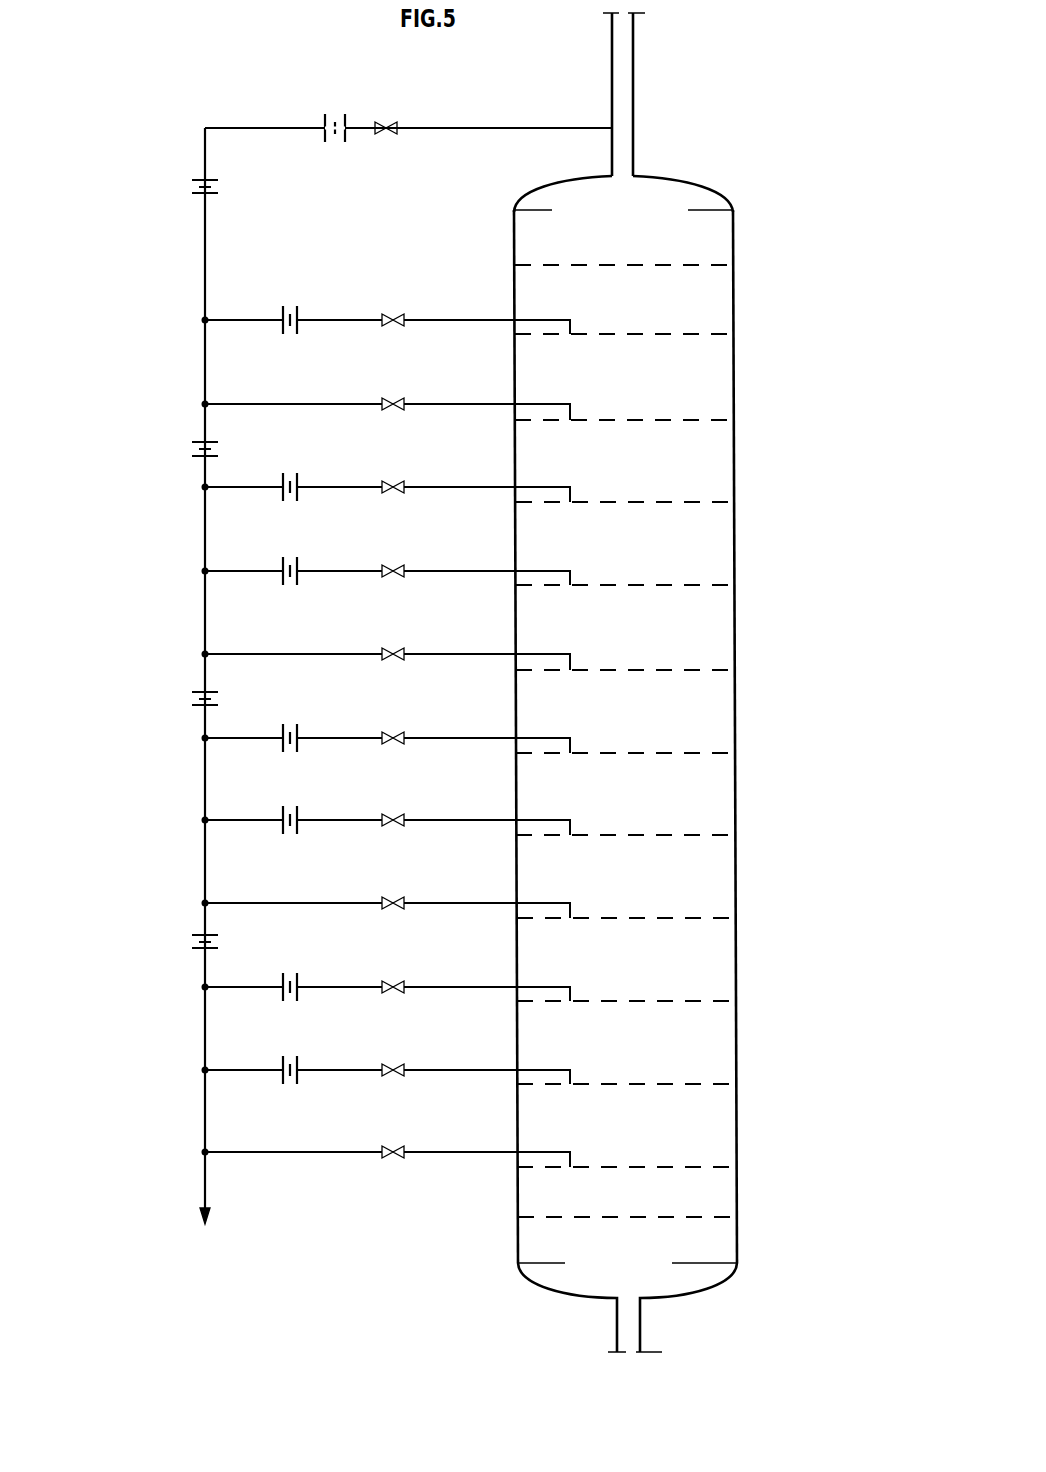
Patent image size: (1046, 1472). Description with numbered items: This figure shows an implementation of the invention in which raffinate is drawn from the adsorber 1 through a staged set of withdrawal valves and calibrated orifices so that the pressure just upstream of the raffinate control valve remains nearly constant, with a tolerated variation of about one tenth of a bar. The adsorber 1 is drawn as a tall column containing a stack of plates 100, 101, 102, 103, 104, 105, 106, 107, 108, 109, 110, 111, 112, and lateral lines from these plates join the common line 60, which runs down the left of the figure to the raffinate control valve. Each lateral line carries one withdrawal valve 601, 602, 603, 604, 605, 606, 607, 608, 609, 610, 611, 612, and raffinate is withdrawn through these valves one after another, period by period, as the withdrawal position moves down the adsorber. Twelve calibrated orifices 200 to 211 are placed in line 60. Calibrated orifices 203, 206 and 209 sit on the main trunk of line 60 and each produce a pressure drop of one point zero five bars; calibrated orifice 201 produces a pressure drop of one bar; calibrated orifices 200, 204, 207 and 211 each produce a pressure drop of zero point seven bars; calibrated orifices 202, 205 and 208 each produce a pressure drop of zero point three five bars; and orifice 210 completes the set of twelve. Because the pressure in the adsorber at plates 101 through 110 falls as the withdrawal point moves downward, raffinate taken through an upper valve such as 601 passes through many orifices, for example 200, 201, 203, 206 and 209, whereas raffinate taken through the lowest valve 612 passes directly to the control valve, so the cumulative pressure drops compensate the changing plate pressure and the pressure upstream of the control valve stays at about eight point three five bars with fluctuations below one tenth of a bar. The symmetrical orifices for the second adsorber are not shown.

The distillation column 1 is at (745, 151).
The line 60 is at (205, 246).
The tray 100 is at (708, 265).
The plate 101 is at (694, 334).
The plate 102 is at (702, 420).
The plate 103 is at (702, 502).
The plate 104 is at (710, 585).
The plate 105 is at (696, 670).
The plate 106 is at (703, 753).
The plate 107 is at (703, 835).
The plate 108 is at (703, 918).
The plate 109 is at (703, 1001).
The plate 110 is at (703, 1084).
The tray 111 is at (703, 1167).
The tray 112 is at (703, 1217).
The calibrated orifice 200 is at (320, 114).
The calibrated orifice 201 is at (193, 180).
The calibrated orifice 202 is at (285, 310).
The calibrated orifice 203 is at (193, 442).
The calibrated orifice 204 is at (285, 477).
The calibrated orifice 205 is at (285, 561).
The calibrated orifice 206 is at (193, 692).
The calibrated orifice 207 is at (285, 728).
The calibrated orifice 208 is at (285, 810).
The calibrated orifice 209 is at (193, 935).
The calibrated orifice 210 is at (285, 977).
The calibrated orifice 211 is at (285, 1060).
The valve 601 is at (383, 121).
The valve 602 is at (392, 313).
The valve 603 is at (393, 397).
The valve 604 is at (392, 480).
The valve 605 is at (392, 564).
The valve 606 is at (393, 647).
The valve 607 is at (392, 731).
The valve 608 is at (392, 813).
The valve 609 is at (393, 896).
The valve 610 is at (392, 980).
The valve 611 is at (392, 1063).
The valve 612 is at (393, 1145).